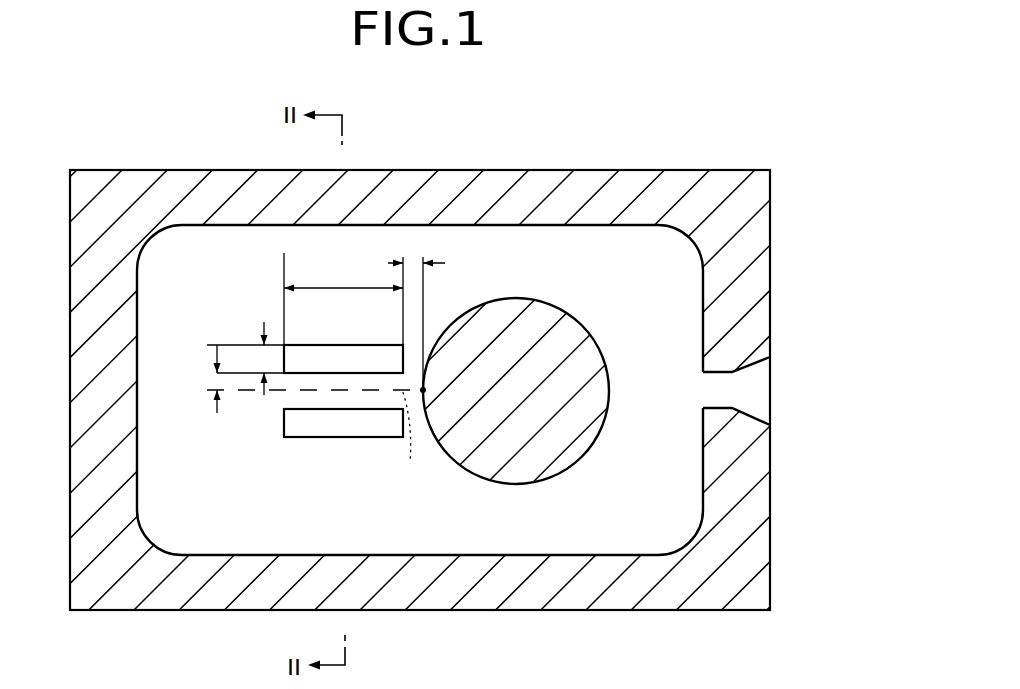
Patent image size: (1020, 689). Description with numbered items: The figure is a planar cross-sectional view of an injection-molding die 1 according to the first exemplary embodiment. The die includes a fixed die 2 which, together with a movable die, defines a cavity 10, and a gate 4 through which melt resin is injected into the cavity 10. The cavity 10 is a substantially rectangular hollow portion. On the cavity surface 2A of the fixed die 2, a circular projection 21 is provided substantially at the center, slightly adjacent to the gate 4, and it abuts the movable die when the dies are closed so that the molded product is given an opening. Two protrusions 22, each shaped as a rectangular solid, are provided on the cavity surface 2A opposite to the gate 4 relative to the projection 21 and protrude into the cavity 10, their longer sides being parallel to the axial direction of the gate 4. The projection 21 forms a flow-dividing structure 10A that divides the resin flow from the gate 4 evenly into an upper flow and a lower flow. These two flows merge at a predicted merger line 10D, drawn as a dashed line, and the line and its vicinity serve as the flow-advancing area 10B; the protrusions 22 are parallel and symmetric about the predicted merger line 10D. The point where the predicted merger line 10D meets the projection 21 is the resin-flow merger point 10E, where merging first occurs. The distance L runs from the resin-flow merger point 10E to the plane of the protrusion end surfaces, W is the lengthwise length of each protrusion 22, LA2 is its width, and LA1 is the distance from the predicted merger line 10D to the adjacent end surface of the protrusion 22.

The injection-molding die 1 is at (490, 128).
The fixed die 2 is at (740, 205).
The cavity 10 is at (667, 269).
The cavity surface 2A is at (667, 323).
The gate 4 is at (750, 388).
The flow-dividing structure 10A is at (609, 393).
The projection 21 is at (567, 432).
The protrusions 22 is at (308, 422).
The flow-advancing area 10B is at (360, 402).
The predicted merger line 10D is at (415, 444).
The resin-flow merger point 10E is at (432, 413).
The lengthwise length of the protrusion W is at (343, 298).
The distance from the resin-flow merger point L is at (416, 313).
The distance from the predicted merger line LA1 is at (227, 379).
The width of the protrusion LA2 is at (245, 358).